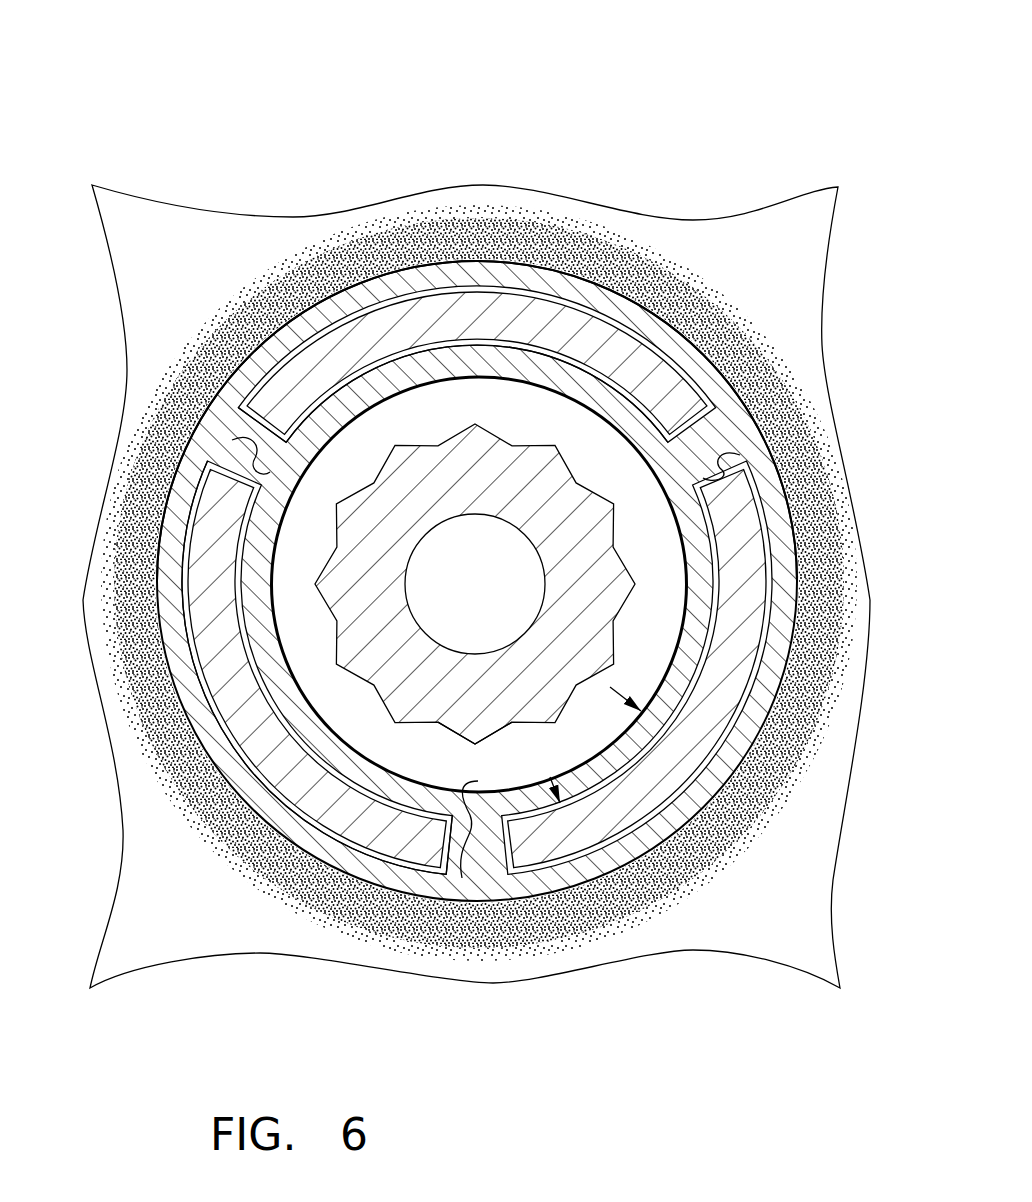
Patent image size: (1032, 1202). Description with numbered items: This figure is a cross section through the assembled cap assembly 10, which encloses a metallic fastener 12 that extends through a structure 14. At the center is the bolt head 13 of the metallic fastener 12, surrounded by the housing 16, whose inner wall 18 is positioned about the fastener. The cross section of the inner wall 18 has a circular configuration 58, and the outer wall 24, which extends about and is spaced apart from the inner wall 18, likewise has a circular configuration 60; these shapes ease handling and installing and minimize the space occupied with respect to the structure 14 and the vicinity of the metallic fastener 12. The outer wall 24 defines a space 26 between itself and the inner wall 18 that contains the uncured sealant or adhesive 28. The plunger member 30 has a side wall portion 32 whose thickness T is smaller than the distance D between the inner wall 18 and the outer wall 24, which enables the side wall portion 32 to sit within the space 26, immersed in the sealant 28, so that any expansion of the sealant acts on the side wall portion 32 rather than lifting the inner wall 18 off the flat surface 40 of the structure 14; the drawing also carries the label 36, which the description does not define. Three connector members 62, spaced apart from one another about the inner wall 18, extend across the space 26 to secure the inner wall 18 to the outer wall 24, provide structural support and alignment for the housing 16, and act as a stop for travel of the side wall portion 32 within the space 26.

The cap assembly 10 is at (680, 95).
The metallic fastener 12 is at (475, 470).
The bolt head 13 is at (466, 714).
The structure 14 is at (683, 232).
The housing 16 is at (735, 337).
The inner wall 18 is at (470, 377).
The outer wall 24 is at (165, 612).
The space 26 is at (276, 480).
The uncured sealant or adhesive 28 is at (538, 268).
The plunger member 30 is at (310, 378).
The side wall portion 32 is at (319, 304).
The inner liner band 36 is at (273, 624).
The surface 40 is at (800, 227).
The circular configuration 58 is at (240, 437).
The circular configuration 60 is at (175, 522).
The connector member 62 is at (247, 455).
The distance D is at (792, 832).
The thickness T is at (587, 868).